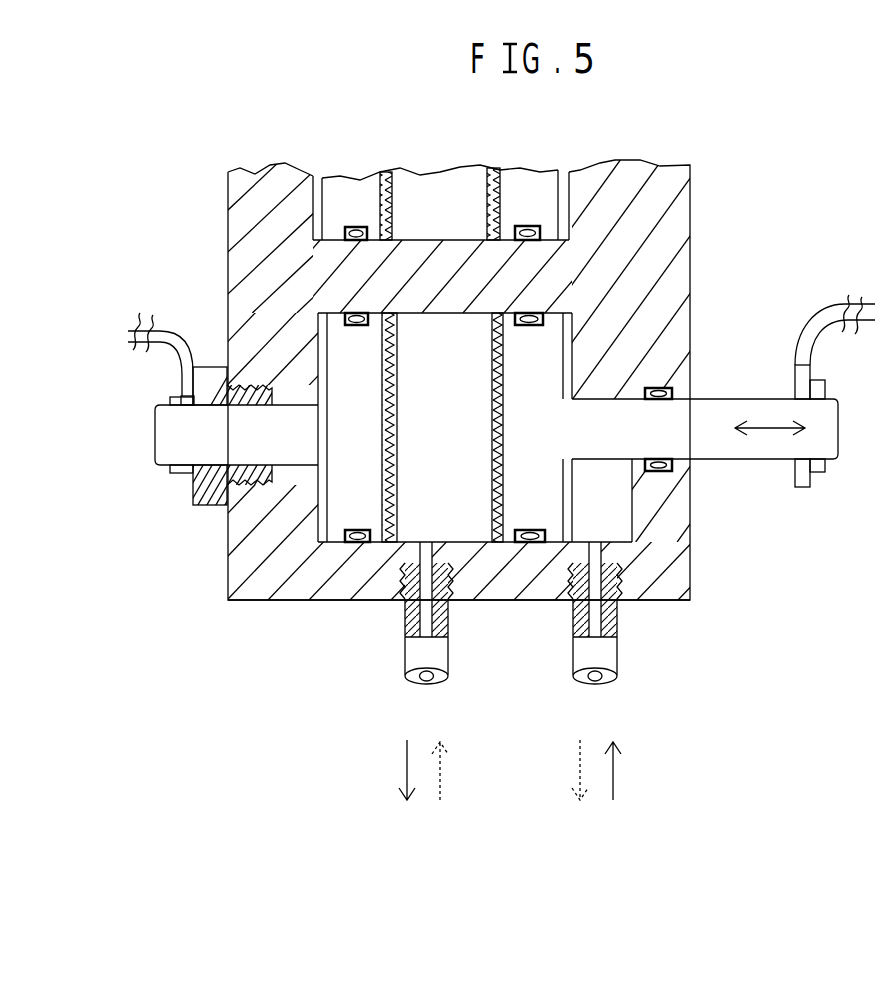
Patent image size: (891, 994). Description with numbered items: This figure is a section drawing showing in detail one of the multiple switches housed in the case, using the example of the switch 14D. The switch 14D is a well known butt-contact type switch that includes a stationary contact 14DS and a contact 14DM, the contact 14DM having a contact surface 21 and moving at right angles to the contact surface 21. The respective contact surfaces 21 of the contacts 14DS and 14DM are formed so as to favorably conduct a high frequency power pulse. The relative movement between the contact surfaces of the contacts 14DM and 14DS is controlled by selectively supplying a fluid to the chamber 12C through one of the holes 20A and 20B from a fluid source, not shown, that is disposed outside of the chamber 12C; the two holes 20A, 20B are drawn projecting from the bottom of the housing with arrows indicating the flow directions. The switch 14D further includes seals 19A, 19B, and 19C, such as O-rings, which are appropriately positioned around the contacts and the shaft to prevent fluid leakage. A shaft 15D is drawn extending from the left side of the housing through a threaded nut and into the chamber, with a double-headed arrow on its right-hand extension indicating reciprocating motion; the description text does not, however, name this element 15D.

The chamber 12C is at (445, 647).
The switch 14D is at (262, 532).
The stationary contact 14DS is at (343, 360).
The contact 14DM is at (543, 352).
The piston rod 15D is at (173, 450).
The seal 19A is at (356, 313).
The seal 19B is at (530, 312).
The seal 19C is at (670, 388).
The hole 20A is at (438, 653).
The hole 20B is at (610, 652).
The contact surface 21 is at (490, 396).